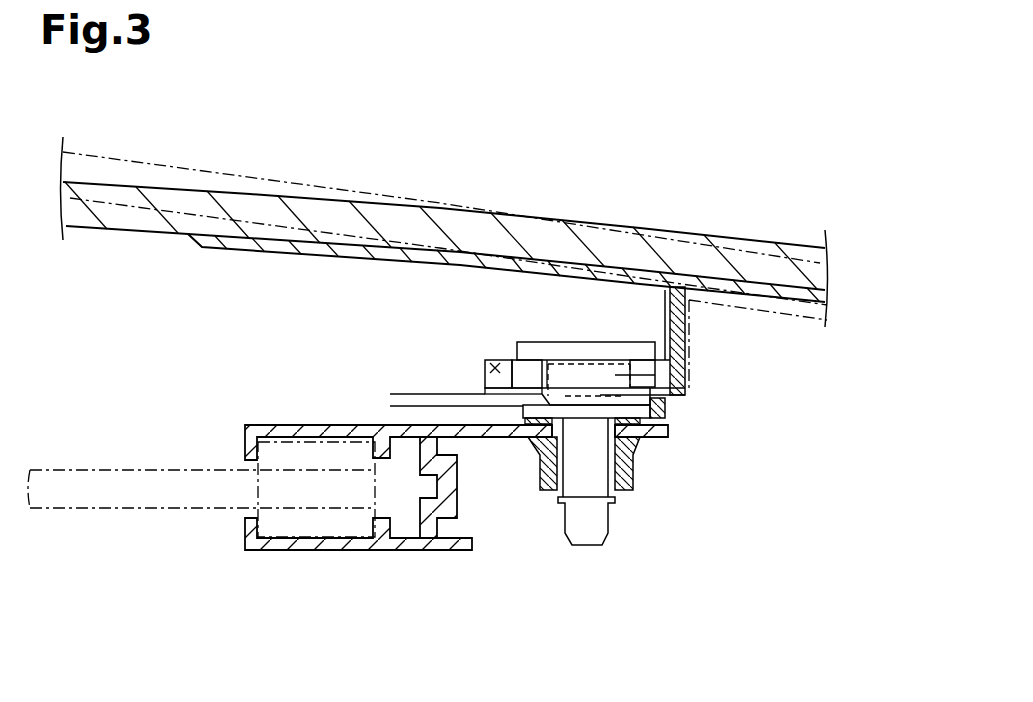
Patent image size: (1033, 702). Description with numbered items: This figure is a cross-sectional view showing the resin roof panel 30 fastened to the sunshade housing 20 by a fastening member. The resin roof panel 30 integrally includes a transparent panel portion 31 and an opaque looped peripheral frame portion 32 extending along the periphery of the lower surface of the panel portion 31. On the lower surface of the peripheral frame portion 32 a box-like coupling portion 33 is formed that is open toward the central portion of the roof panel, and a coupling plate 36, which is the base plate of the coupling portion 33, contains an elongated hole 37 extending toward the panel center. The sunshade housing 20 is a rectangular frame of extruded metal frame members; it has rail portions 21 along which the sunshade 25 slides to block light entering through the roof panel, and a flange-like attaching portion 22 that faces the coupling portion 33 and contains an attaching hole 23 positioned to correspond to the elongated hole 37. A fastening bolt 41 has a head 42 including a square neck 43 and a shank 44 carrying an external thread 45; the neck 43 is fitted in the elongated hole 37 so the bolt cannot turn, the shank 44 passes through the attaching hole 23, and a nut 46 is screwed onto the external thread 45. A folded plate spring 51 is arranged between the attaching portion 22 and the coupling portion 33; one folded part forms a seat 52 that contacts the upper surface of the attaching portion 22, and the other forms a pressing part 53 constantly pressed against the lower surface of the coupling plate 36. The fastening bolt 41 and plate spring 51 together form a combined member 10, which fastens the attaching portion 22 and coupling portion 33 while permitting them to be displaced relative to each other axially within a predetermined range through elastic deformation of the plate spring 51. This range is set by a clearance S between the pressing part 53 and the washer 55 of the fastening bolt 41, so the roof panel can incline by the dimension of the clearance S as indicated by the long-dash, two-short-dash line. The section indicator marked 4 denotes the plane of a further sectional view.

The section line 4 is at (583, 194).
The combined member 10 is at (572, 548).
The sunshade housing 20 is at (408, 554).
The rail portion 21 is at (318, 546).
The attaching portion 22 is at (457, 428).
The attaching hole 23 is at (537, 450).
The sunshade 25 is at (136, 466).
The resin roof panel 30 is at (458, 150).
The panel portion 31 is at (473, 233).
The peripheral frame portion 32 is at (525, 265).
The coupling portion 33 is at (677, 362).
The coupling plate 36 is at (497, 368).
The elongated hole 37 is at (524, 381).
The fastening bolt 41 is at (603, 341).
The head 42 is at (640, 346).
The neck 43 is at (655, 377).
The shank 44 is at (598, 517).
The external thread 45 is at (612, 470).
The nut 46 is at (630, 467).
The plate spring 51 is at (670, 413).
The seat 52 is at (515, 442).
The pressing part 53 is at (588, 387).
The washer 55 is at (517, 412).
The clearance S is at (400, 383).